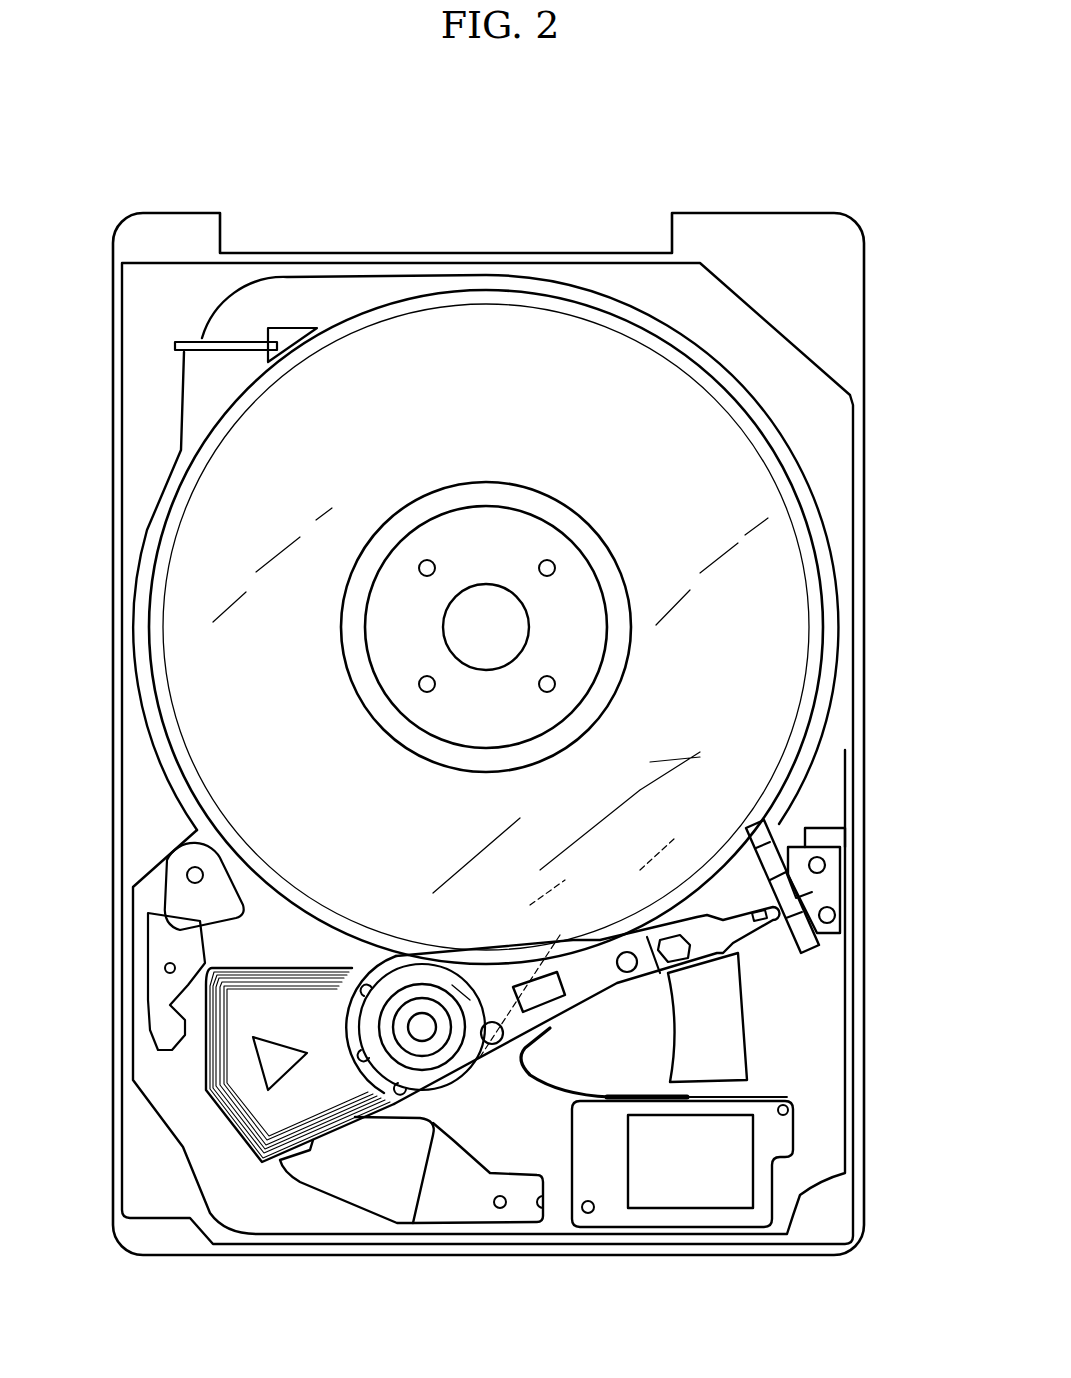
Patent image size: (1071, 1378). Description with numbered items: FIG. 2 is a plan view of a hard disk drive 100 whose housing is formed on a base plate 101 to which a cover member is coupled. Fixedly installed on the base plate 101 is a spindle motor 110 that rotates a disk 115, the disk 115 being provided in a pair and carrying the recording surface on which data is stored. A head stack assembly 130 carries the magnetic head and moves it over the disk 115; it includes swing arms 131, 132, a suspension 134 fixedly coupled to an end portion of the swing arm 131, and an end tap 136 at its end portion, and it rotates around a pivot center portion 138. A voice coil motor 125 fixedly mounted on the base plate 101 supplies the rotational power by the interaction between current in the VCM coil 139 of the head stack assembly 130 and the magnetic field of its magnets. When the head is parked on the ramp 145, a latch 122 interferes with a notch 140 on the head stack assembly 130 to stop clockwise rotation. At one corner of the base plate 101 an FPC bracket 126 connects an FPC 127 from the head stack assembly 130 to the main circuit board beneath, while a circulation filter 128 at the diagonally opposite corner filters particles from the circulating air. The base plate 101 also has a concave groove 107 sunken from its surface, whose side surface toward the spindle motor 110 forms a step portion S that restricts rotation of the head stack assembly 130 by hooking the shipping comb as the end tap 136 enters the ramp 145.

The hard disk drive 100 is at (875, 201).
The base plate 101 is at (835, 772).
The concave groove 107 is at (720, 1045).
The spindle motor 110 is at (525, 535).
The disk 115 is at (765, 600).
The latch 122 is at (170, 985).
The voice coil motor 125 is at (391, 1205).
The FPC bracket 126 is at (690, 1210).
The FPC 127 is at (585, 1100).
The circulation filter 128 is at (227, 352).
The head stack assembly 130 is at (492, 1069).
The swing arm 131 is at (538, 1008).
The swing arm 132 is at (452, 985).
The suspension 134 is at (745, 925).
The end tap 136 is at (783, 913).
The pivot center portion 138 is at (425, 1030).
The VCM coil 139 is at (257, 1160).
The notch 140 is at (188, 993).
The ramp 145 is at (790, 857).
The step portion S is at (707, 973).